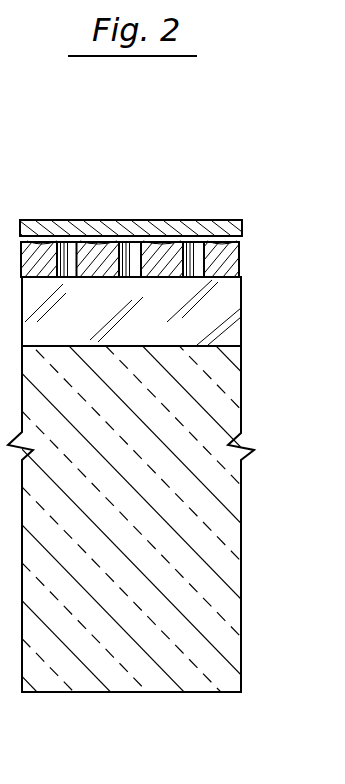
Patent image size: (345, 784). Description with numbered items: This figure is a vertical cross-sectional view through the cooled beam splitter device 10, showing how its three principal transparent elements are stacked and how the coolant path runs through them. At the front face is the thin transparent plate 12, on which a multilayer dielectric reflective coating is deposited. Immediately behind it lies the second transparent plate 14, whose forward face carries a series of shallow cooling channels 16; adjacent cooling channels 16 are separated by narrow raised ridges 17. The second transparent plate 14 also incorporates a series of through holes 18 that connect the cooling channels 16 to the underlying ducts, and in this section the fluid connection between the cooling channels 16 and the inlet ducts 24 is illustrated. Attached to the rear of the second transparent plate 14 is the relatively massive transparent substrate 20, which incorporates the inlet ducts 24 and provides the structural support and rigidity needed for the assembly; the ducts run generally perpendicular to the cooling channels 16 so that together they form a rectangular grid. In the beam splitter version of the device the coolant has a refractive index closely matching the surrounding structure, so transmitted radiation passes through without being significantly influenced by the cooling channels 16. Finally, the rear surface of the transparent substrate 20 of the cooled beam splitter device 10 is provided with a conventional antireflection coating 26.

The cooled beam splitter device 10 is at (147, 158).
The thin transparent plate 12 is at (197, 219).
The second transparent plate 14 is at (234, 260).
The cooling channels 16 is at (50, 219).
The raised ridges 17 is at (153, 218).
The through holes 18 is at (184, 278).
The transparent substrate 20 is at (217, 543).
The inlet ducts 24 is at (232, 332).
The antireflection coating 26 is at (108, 693).